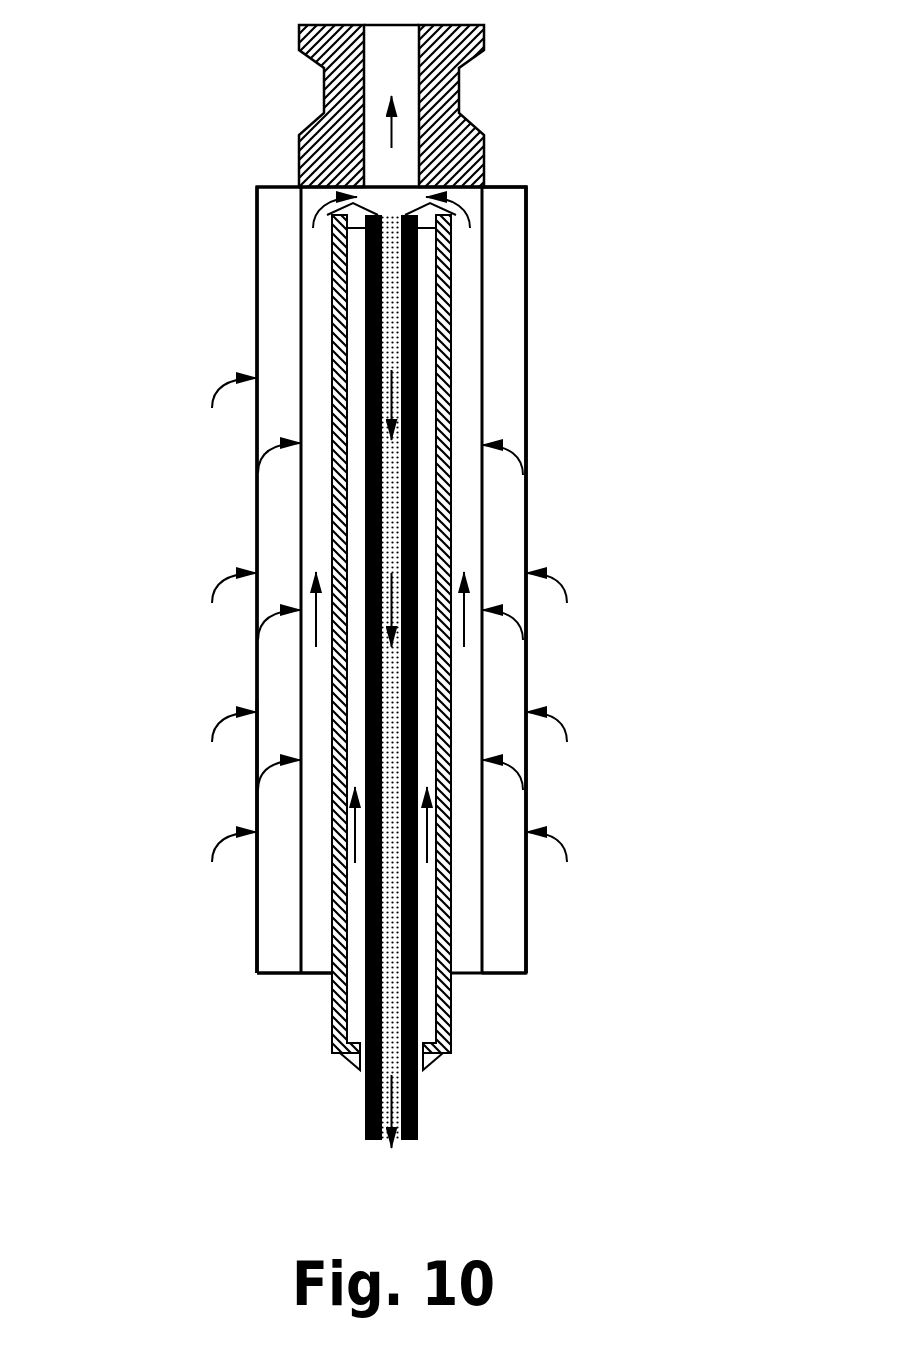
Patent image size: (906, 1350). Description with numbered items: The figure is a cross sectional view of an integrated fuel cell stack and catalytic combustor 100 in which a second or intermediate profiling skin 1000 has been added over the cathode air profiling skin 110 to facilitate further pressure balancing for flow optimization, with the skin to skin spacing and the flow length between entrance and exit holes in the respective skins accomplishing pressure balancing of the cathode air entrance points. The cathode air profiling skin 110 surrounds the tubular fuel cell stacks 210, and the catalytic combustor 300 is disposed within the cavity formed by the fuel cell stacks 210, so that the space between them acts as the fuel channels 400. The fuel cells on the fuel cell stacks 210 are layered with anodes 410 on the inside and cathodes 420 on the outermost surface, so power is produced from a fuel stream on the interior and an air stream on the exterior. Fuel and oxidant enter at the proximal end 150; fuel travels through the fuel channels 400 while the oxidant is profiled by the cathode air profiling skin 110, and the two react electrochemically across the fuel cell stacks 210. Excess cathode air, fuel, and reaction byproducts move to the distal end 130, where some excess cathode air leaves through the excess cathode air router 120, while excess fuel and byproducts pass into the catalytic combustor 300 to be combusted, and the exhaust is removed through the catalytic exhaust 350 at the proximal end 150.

The integrated fuel cell stack and catalytic combustor 100 is at (237, 155).
The cathode air profiling skin 110 is at (301, 353).
The excess cathode air router 120 is at (484, 148).
The distal end 130 is at (532, 220).
The proximal end 150 is at (197, 975).
The second or intermediate profiling skin 1000 is at (257, 433).
The fuel channels 400 is at (357, 505).
The fuel cell stacks 210 is at (332, 993).
The cathodes 420 is at (332, 1025).
The anodes 410 is at (332, 1042).
The catalytic combustor 300 is at (422, 1090).
The catalytic exhaust 350 is at (365, 1157).